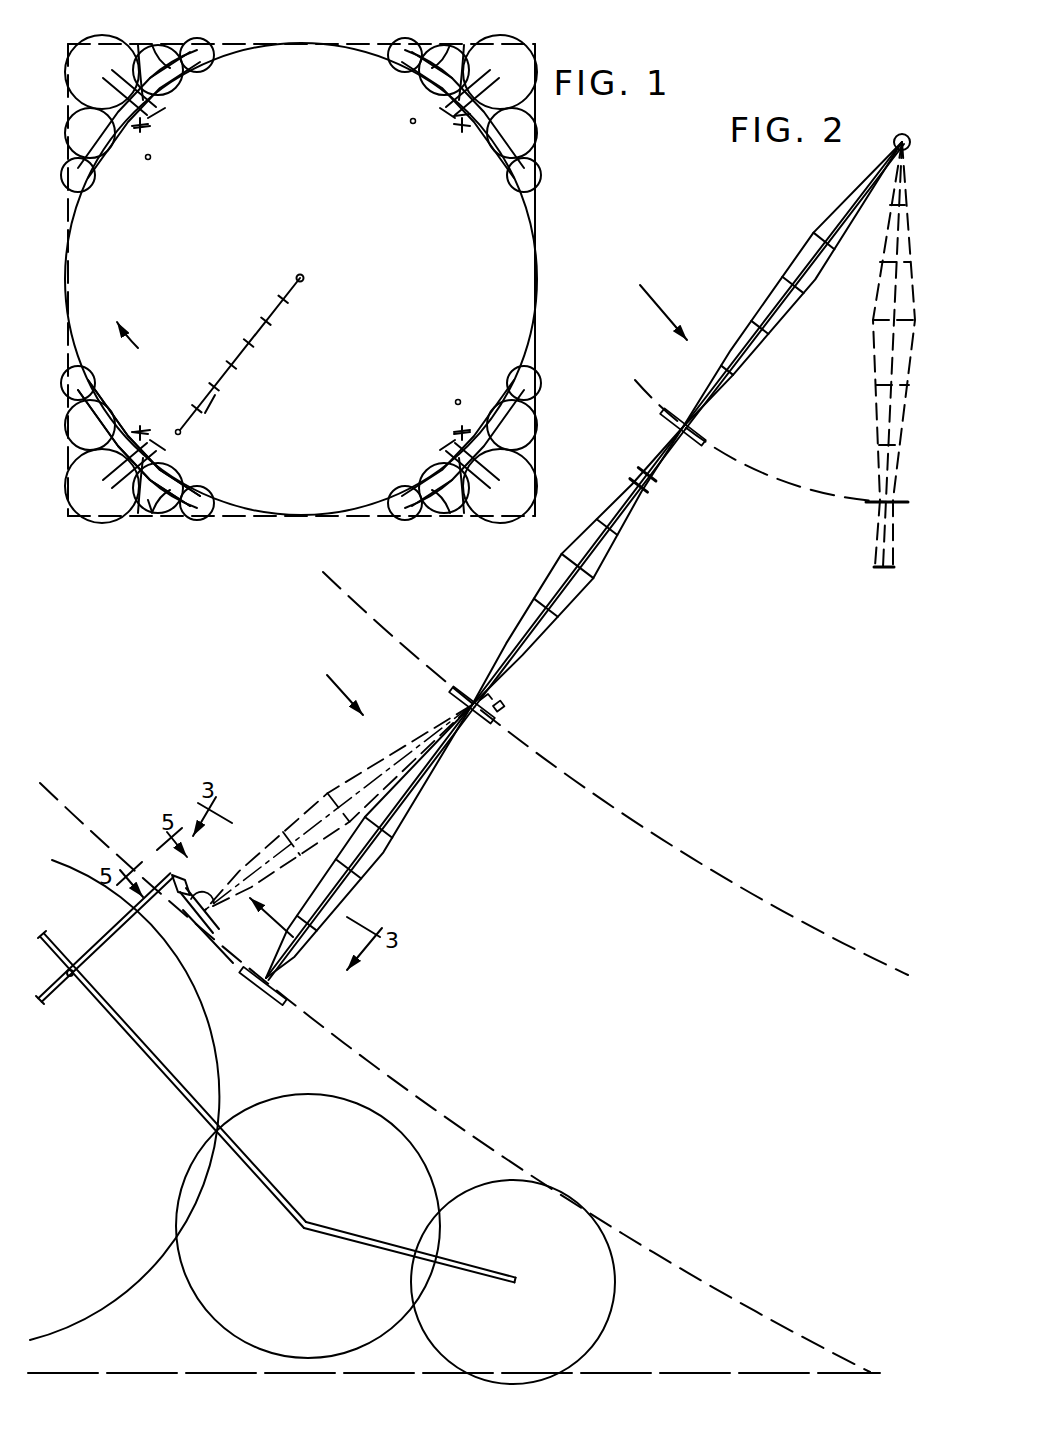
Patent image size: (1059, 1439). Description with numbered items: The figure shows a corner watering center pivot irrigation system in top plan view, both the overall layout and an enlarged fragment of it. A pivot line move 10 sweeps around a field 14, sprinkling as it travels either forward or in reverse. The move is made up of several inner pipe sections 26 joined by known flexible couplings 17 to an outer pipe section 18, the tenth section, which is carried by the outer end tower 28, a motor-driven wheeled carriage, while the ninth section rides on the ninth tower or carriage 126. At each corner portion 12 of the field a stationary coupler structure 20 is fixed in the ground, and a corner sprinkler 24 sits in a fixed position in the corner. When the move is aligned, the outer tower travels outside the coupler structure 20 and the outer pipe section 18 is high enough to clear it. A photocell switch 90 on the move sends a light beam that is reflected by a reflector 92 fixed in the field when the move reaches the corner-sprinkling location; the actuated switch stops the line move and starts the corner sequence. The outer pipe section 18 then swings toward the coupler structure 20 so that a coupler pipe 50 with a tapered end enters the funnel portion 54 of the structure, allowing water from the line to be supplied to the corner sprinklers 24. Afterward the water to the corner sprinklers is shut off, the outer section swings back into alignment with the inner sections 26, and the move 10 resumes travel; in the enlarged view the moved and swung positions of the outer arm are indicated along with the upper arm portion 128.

In FIG. 1, the pivot line move 10 is at (255, 362).
In FIG. 2, the pivot line move 10 is at (503, 632).
In FIG. 1, the corner portion 12 is at (218, 46).
In FIG. 2, the corner portion 12 is at (668, 1245).
In FIG. 1, the field 14 is at (362, 44).
In FIG. 2, the field 14 is at (850, 1372).
In FIG. 2, the flexible coupling 17 is at (688, 446).
In FIG. 1, the outer pipe section 18 is at (160, 440).
In FIG. 2, the outer pipe section 18 is at (310, 793).
In FIG. 1, the stationary coupler structure 20 is at (152, 130).
In FIG. 2, the stationary coupler structure 20 is at (197, 888).
In FIG. 1, the corner sprinkler 24 is at (160, 47).
In FIG. 2, the corner sprinkler 24 is at (310, 1220).
In FIG. 1, the inner pipe section 26 is at (215, 395).
In FIG. 2, the inner pipe section 26 is at (758, 360).
In FIG. 2, the outer end tower 28 is at (260, 993).
In FIG. 1, the coupler pipe 50 is at (150, 512).
In FIG. 2, the coupler pipe 50 is at (214, 910).
In FIG. 1, the funnel portion 54 is at (152, 120).
In FIG. 2, the funnel portion 54 is at (183, 918).
In FIG. 2, the photocell switch 90 is at (492, 698).
In FIG. 1, the reflector 92 is at (150, 160).
In FIG. 2, the reflector 92 is at (503, 705).
In FIG. 2, the ninth tower or carriage 126 is at (547, 588).
In FIG. 2, the upper arm section 128 is at (787, 258).